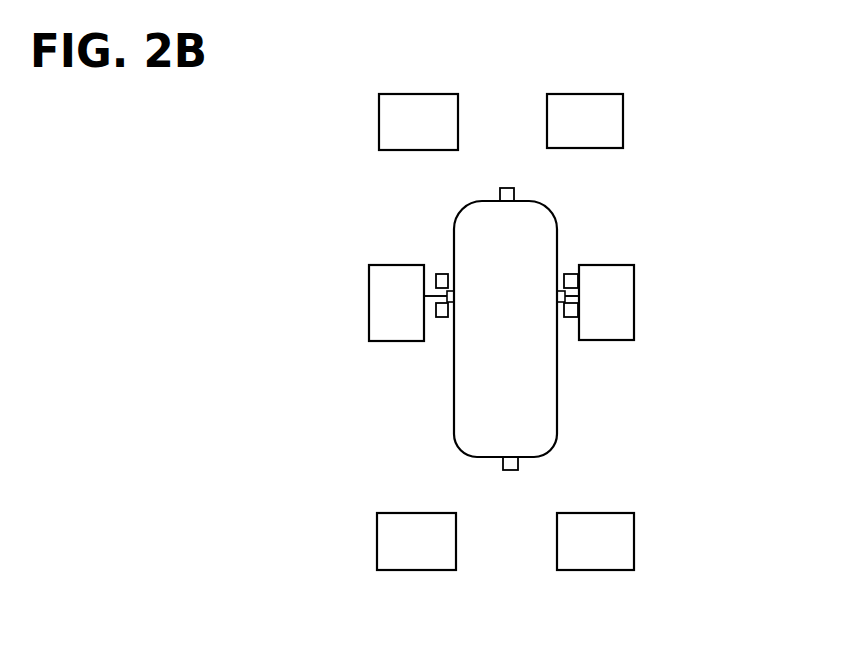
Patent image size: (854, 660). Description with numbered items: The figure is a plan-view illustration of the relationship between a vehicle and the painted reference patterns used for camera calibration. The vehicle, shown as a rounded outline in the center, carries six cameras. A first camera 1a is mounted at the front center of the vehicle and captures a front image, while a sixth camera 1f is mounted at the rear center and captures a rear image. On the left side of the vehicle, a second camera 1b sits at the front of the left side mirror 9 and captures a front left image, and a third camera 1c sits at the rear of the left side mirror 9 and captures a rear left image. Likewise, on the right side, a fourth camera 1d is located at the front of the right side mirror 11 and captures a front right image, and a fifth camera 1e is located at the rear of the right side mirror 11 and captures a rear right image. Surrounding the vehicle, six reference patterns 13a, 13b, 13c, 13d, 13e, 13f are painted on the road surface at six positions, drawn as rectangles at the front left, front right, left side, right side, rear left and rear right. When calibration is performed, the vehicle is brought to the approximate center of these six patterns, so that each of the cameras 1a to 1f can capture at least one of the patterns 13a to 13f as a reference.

The first camera 1a is at (505, 188).
The second camera 1b is at (441, 273).
The third camera 1c is at (443, 318).
The fourth camera 1d is at (571, 273).
The fifth camera 1e is at (570, 318).
The sixth camera 1f is at (510, 471).
The left side mirror 9 is at (437, 295).
The right side mirror 11 is at (575, 295).
The reference pattern 13a is at (389, 105).
The reference pattern 13b is at (615, 113).
The reference pattern 13c is at (380, 270).
The reference pattern 13d is at (609, 272).
The reference pattern 13e is at (388, 532).
The reference pattern 13f is at (623, 530).